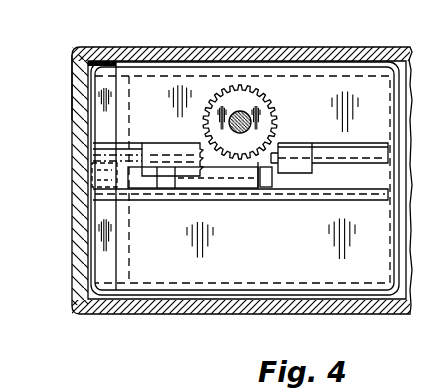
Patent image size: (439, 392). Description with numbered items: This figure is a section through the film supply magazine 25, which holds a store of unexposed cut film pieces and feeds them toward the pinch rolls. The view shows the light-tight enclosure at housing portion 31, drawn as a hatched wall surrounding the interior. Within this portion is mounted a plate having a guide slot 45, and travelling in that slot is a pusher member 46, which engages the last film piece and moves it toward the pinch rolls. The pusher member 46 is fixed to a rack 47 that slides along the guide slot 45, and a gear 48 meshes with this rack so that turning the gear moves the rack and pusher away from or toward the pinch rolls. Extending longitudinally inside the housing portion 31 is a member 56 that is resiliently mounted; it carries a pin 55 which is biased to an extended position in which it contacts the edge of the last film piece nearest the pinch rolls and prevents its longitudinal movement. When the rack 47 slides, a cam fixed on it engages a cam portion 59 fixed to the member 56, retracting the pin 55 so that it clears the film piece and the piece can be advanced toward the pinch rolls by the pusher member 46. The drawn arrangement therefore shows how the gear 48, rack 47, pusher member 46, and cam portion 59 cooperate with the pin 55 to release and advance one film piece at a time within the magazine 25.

The film supply magazine 25 is at (157, 318).
The housing portion 31 is at (72, 60).
The member 56 is at (291, 64).
The gear 48 is at (269, 100).
The cam portion 59 is at (183, 178).
The pusher member 46 is at (92, 186).
The rack 47 is at (250, 178).
The guide slot 45 is at (273, 176).
The pin 55 is at (392, 178).